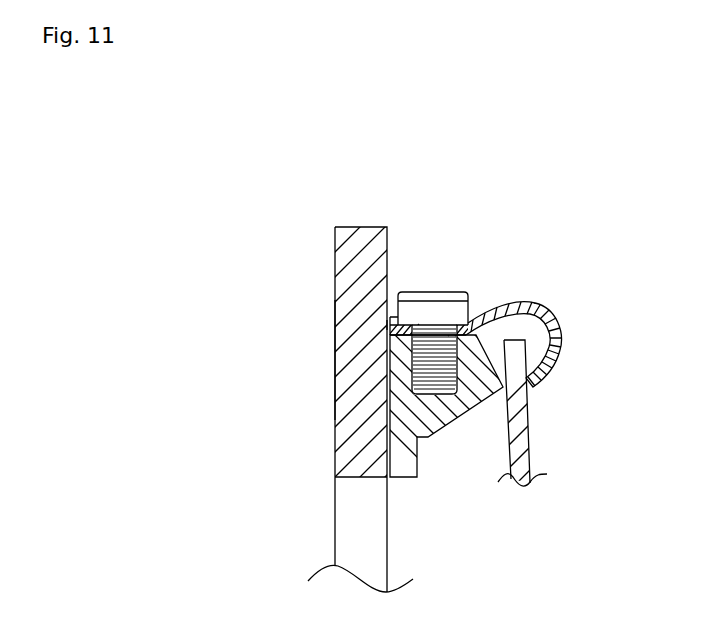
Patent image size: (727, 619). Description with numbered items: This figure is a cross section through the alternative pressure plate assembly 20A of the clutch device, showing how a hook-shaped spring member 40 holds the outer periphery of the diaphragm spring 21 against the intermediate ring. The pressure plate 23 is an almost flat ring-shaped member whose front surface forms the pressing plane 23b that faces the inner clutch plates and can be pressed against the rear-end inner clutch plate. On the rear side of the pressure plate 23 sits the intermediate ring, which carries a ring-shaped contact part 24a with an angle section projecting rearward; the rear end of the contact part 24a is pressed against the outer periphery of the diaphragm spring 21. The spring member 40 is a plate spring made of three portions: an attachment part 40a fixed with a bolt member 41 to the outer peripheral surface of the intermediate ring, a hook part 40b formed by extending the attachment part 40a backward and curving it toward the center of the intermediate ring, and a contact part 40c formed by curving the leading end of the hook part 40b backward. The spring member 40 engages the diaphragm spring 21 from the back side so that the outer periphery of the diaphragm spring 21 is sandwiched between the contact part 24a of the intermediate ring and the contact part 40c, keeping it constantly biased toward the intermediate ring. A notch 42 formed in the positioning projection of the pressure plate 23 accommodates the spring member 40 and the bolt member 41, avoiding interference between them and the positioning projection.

The pressure plate assembly 20A is at (563, 266).
The diaphragm spring 21 is at (528, 458).
The pressure plate 23 is at (354, 214).
The pressing plane 23b is at (335, 278).
The contact part 24a is at (506, 391).
The spring member 40 is at (533, 313).
The attachment part 40a is at (471, 321).
The hook part 40b is at (562, 343).
The contact part 40c is at (531, 386).
The bolt member 41 is at (434, 291).
The notch 42 is at (389, 313).